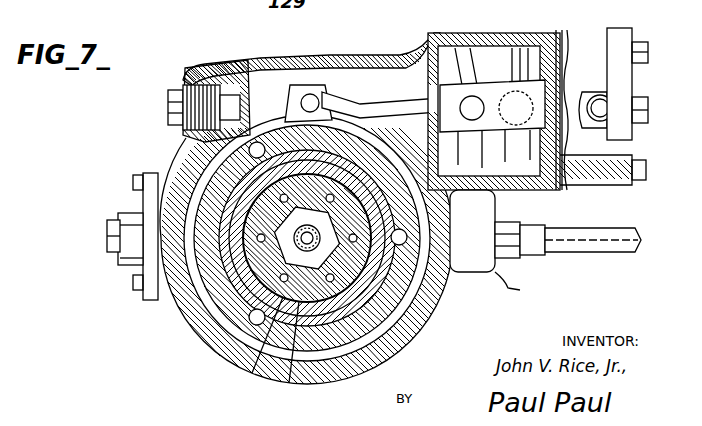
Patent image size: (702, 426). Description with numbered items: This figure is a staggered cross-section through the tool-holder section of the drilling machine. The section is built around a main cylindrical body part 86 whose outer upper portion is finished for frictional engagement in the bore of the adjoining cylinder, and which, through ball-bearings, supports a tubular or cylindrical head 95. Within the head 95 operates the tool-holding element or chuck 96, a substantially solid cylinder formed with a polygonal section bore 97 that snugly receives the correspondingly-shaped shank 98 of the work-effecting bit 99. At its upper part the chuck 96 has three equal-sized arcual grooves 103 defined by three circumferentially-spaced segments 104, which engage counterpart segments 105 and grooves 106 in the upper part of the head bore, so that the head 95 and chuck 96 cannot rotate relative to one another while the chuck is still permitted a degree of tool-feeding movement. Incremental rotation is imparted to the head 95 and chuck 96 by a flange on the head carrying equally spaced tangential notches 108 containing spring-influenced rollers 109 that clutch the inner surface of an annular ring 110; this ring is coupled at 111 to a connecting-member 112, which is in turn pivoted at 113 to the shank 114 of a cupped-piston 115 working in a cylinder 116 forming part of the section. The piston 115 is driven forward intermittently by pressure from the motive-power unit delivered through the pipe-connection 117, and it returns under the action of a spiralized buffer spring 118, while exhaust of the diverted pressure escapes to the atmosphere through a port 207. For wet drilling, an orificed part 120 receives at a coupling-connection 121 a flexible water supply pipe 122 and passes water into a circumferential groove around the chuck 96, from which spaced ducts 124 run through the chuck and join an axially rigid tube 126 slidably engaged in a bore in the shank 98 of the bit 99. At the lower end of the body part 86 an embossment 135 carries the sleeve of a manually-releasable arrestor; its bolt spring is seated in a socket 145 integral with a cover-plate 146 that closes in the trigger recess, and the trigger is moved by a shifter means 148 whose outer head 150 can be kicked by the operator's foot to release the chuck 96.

The main cylindrical body part 86 is at (205, 330).
The cylindrical head 95 is at (393, 332).
The chuck 96 is at (258, 372).
The polygonal section bore 97 is at (392, 157).
The shank 98 is at (380, 352).
The bit 99 is at (335, 54).
The arcual grooves 103 is at (200, 165).
The segments 104 is at (360, 150).
The counterpart segments 105 is at (300, 120).
The grooves 106 is at (335, 150).
The tangential notches 108 is at (200, 137).
The rollers 109 is at (275, 132).
The annular ring 110 is at (297, 355).
The coupling 111 is at (312, 94).
The connecting-member 112 is at (380, 104).
The pivot 113 is at (478, 96).
The shank 114 is at (518, 46).
The cupped-piston 115 is at (520, 186).
The cylinder 116 is at (565, 33).
The pipe-connection 117 is at (612, 112).
The buffer spring 118 is at (450, 46).
The orificed part 120 is at (499, 247).
The coupling-connection 121 is at (532, 256).
The water supply pipe 122 is at (614, 252).
The ducts 124 is at (307, 238).
The tube 126 is at (400, 290).
The embossment 135 is at (192, 55).
The socket 145 is at (125, 262).
The cover-plate 146 is at (145, 280).
The shifter means 148 is at (120, 248).
The head 150 is at (107, 236).
The port 207 is at (590, 97).